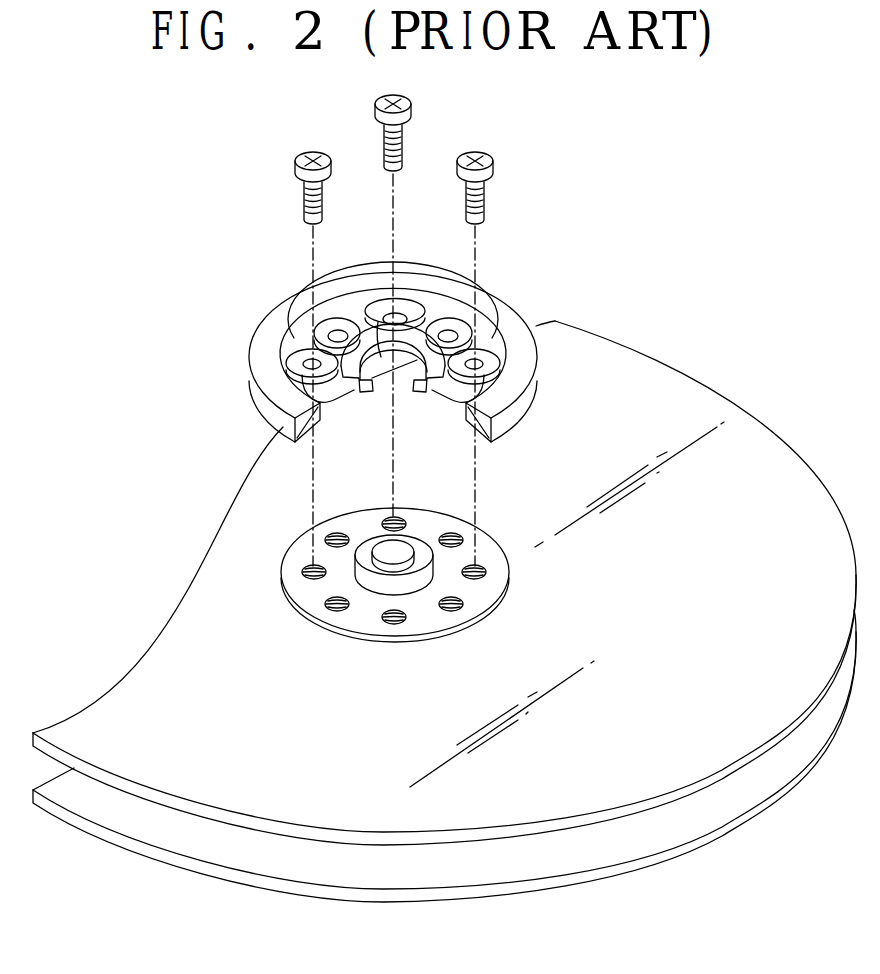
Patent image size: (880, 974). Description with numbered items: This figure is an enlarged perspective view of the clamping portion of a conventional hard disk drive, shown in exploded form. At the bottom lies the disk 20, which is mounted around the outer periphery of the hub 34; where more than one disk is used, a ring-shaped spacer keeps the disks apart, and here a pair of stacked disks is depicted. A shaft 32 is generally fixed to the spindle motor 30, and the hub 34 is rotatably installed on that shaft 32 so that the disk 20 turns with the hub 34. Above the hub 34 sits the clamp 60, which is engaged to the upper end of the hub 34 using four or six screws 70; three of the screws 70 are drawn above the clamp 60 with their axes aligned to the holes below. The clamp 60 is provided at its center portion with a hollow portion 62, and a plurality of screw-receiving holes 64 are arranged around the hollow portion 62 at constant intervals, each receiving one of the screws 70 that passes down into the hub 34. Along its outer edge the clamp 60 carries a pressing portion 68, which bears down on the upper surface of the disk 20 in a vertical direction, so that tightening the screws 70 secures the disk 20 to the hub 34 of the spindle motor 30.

The disk 20 is at (717, 768).
The spindle motor 30 is at (406, 581).
The shaft 32 is at (386, 548).
The hub 34 is at (486, 593).
The clamp 60 is at (338, 374).
The hollow portion 62 is at (307, 322).
The screw-receiving holes 64 is at (452, 404).
The pressing portion 68 is at (506, 421).
The screws 70 is at (376, 104).